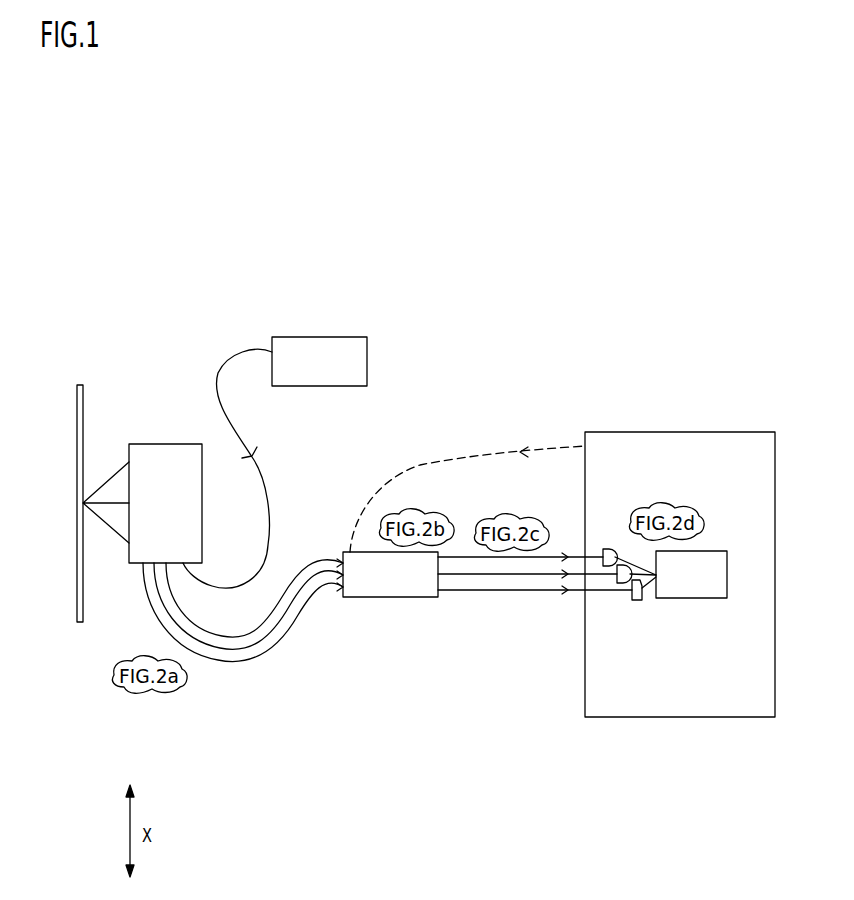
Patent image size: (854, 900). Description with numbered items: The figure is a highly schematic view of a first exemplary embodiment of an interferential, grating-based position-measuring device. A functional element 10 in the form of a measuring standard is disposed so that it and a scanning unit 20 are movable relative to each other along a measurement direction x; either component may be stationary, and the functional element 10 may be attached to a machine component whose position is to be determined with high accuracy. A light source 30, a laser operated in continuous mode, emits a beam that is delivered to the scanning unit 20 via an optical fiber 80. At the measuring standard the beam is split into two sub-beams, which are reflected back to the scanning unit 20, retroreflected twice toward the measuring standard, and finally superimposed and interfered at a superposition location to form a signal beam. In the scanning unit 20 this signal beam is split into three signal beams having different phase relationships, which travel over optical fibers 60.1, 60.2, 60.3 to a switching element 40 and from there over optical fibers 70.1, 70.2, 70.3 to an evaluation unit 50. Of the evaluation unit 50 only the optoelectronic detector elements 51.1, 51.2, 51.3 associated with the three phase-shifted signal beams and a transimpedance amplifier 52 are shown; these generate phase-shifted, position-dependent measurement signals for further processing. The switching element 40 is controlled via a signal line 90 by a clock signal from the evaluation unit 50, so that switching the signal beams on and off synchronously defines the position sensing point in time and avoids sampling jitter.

The functional element 10 is at (78, 612).
The scanning unit 20 is at (160, 452).
The light source 30 is at (323, 357).
The switching element 40 is at (402, 590).
The evaluation unit 50 is at (747, 700).
The optoelectronic detector element 51.1 is at (640, 600).
The optoelectronic detector element 51.2 is at (623, 583).
The optoelectronic detector element 51.3 is at (613, 552).
The transimpedance amplifier 52 is at (713, 562).
The optical fiber 60.1 is at (220, 663).
The optical fiber 60.2 is at (263, 653).
The optical fiber 60.3 is at (285, 607).
The optical fiber 70.1 is at (480, 595).
The optical fiber 70.2 is at (547, 595).
The optical fiber 70.3 is at (550, 555).
The optical fiber 80 is at (220, 368).
The signal line 90 is at (490, 457).